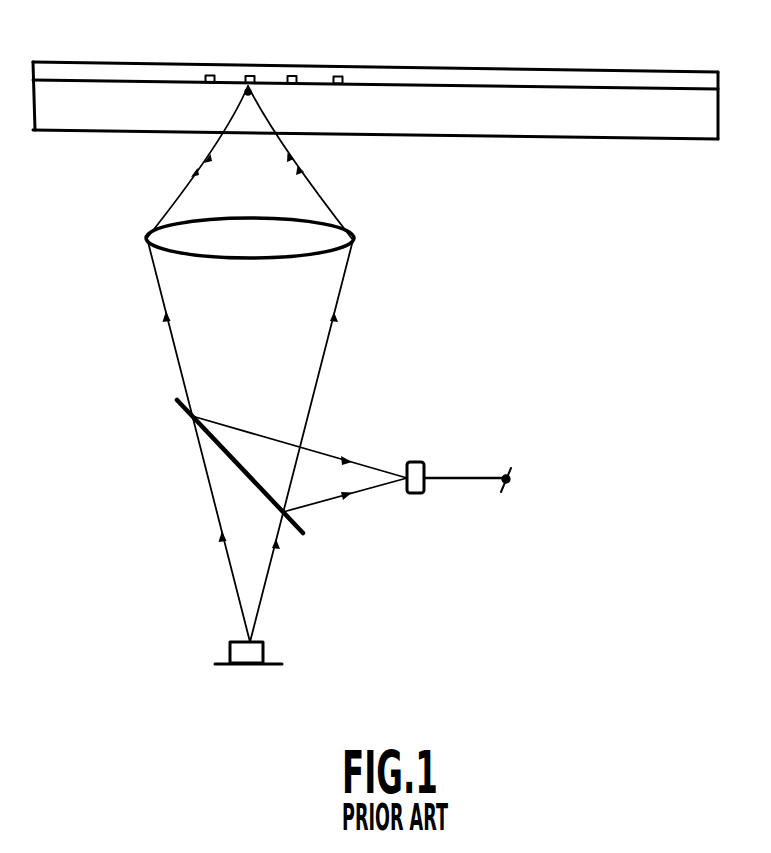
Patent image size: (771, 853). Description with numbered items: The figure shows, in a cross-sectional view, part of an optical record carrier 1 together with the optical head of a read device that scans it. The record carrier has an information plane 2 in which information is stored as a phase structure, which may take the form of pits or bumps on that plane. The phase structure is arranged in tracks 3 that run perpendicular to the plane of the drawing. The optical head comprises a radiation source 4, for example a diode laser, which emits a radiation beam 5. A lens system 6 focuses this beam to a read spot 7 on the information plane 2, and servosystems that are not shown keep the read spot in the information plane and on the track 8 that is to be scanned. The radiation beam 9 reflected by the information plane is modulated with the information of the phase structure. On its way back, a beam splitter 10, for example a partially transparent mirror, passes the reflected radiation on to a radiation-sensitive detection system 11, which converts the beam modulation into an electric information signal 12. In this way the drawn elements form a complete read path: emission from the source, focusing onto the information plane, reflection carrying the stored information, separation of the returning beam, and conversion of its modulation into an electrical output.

The optical record carrier 1 is at (715, 36).
The information plane 2 is at (607, 87).
The tracks 3 is at (338, 75).
The radiation source 4 is at (266, 650).
The radiation beam 5 is at (168, 336).
The lens system 6 is at (182, 242).
The read spot 7 is at (248, 94).
The track to be scanned 8 is at (251, 75).
The reflected radiation beam 9 is at (317, 186).
The beam splitter 10 is at (178, 401).
The radiation-sensitive detection system 11 is at (411, 494).
The electric information signal 12 is at (468, 499).